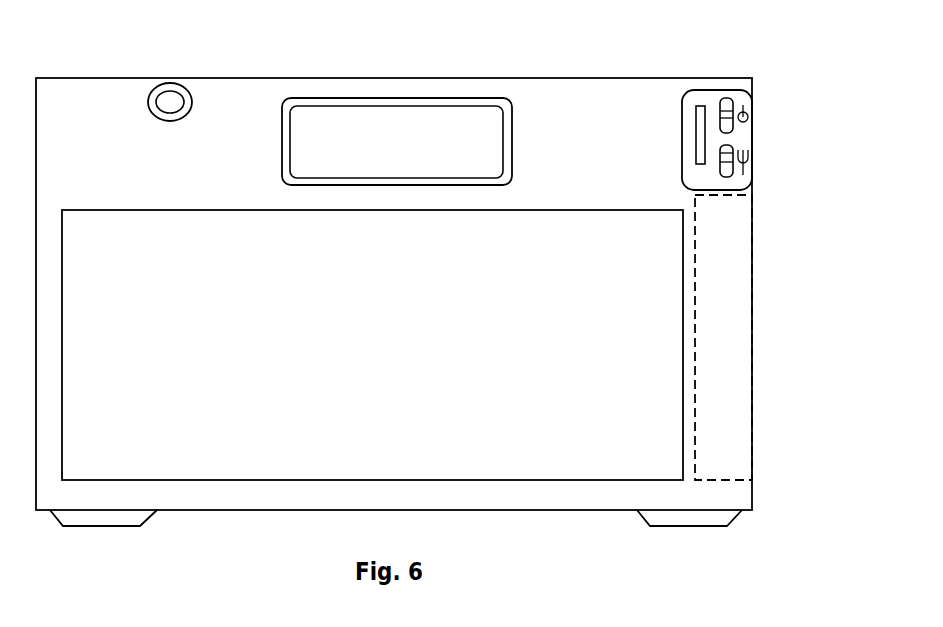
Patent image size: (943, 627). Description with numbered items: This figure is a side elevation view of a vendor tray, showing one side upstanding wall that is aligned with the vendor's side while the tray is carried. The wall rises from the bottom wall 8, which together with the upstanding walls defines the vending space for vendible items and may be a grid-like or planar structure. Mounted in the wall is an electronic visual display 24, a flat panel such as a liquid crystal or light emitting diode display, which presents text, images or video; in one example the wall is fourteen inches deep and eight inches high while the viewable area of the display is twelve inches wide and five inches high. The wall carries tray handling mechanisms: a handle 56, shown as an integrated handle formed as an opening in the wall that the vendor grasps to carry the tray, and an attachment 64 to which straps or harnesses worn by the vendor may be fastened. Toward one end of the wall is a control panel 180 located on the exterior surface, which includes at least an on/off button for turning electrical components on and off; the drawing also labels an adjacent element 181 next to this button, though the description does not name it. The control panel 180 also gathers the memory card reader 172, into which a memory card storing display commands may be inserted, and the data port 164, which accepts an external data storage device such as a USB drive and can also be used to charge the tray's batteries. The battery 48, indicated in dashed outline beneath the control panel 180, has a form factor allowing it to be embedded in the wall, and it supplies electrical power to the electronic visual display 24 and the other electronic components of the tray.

The bottom wall 8 is at (575, 495).
The electronic visual display 24 is at (552, 212).
The battery 48 is at (725, 318).
The handle 56 is at (383, 128).
The attachment 64 is at (172, 98).
The data port 164 is at (728, 148).
The memory card reader 172 is at (695, 105).
The control panel 180 is at (728, 102).
The power indicator 181 is at (733, 98).